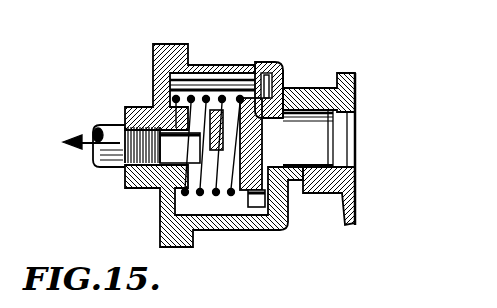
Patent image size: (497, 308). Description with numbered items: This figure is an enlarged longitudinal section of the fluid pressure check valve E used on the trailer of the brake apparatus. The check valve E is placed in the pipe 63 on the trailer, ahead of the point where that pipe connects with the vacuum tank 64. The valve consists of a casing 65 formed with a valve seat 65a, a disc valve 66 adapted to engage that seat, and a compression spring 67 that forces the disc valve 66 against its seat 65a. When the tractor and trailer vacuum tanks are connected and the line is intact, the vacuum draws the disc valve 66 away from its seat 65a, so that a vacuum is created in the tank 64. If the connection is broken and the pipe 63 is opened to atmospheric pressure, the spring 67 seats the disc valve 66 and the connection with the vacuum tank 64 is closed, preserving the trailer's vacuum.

The pipe 63 is at (110, 128).
The vacuum tank 64 is at (355, 92).
The casing 65 is at (212, 65).
The valve seat 65a is at (281, 86).
The disc valve 66 is at (254, 79).
The compression spring 67 is at (235, 195).
The check valve E is at (291, 86).